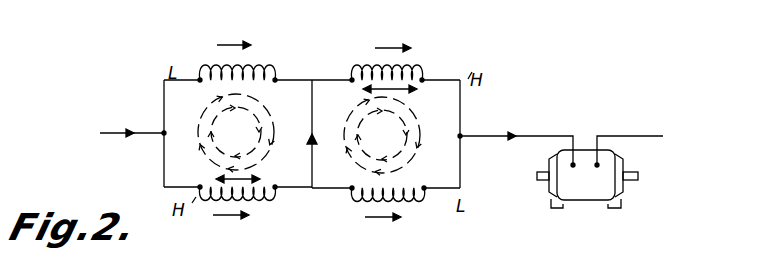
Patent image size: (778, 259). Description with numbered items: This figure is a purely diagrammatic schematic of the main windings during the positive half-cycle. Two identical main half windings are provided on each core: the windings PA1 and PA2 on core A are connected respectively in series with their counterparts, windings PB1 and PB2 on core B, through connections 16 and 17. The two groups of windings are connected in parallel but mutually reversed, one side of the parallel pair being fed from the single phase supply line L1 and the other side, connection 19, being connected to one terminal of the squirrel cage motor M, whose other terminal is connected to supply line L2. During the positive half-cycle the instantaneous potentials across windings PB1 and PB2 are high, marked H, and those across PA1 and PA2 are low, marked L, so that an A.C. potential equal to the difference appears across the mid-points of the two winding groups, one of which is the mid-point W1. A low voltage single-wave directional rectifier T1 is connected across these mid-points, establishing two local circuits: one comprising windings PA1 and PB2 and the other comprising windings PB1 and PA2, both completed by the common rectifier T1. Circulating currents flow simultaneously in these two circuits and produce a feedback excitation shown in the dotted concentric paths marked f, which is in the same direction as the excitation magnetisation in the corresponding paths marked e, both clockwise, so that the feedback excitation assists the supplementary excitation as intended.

The connection 16 is at (163, 171).
The connection 17 is at (293, 187).
The connection 19 is at (463, 183).
The single phase supply line L1 is at (133, 123).
The supply line L2 is at (560, 139).
The main half winding PA1 is at (203, 68).
The main half winding PB1 is at (405, 62).
The main half winding PB2 is at (266, 199).
The main half winding PA2 is at (420, 199).
The mid-point W1 is at (294, 104).
The low voltage single-wave directional rectifier T1 is at (323, 146).
The excitation magnetisation path e is at (309, 134).
The feedback excitation path f is at (199, 147).
The squirrel cage motor M is at (587, 179).